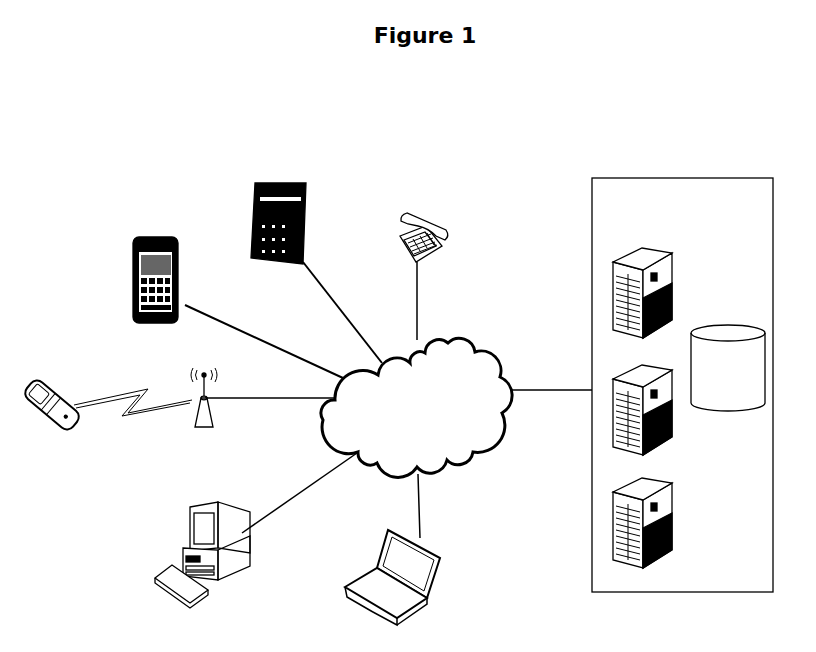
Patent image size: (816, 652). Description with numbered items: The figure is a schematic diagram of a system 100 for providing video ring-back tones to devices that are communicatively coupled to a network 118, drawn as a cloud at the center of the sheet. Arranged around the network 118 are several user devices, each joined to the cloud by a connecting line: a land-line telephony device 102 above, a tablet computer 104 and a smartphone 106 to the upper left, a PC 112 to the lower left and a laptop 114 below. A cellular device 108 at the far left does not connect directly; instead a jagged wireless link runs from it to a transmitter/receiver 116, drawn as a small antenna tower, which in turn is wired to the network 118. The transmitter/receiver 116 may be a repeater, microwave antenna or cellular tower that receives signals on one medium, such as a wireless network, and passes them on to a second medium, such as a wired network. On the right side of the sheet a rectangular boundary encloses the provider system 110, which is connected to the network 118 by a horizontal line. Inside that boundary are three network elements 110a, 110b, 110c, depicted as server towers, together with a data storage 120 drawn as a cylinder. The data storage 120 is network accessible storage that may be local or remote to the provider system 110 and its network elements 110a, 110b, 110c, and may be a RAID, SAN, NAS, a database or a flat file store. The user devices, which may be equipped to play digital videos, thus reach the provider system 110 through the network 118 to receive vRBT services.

The system 100 is at (391, 354).
The land-line telephony device 102 is at (412, 212).
The tablet computer 104 is at (252, 182).
The smartphone 106 is at (134, 240).
The cellular device 108 is at (62, 381).
The provider system 110 is at (682, 385).
The network element 110a is at (673, 305).
The network element 110b is at (665, 442).
The network element 110c is at (673, 545).
The PC 112 is at (157, 581).
The laptop 114 is at (425, 601).
The transmitter/receiver 116 is at (211, 428).
The network 118 is at (416, 407).
The data storage 120 is at (728, 368).